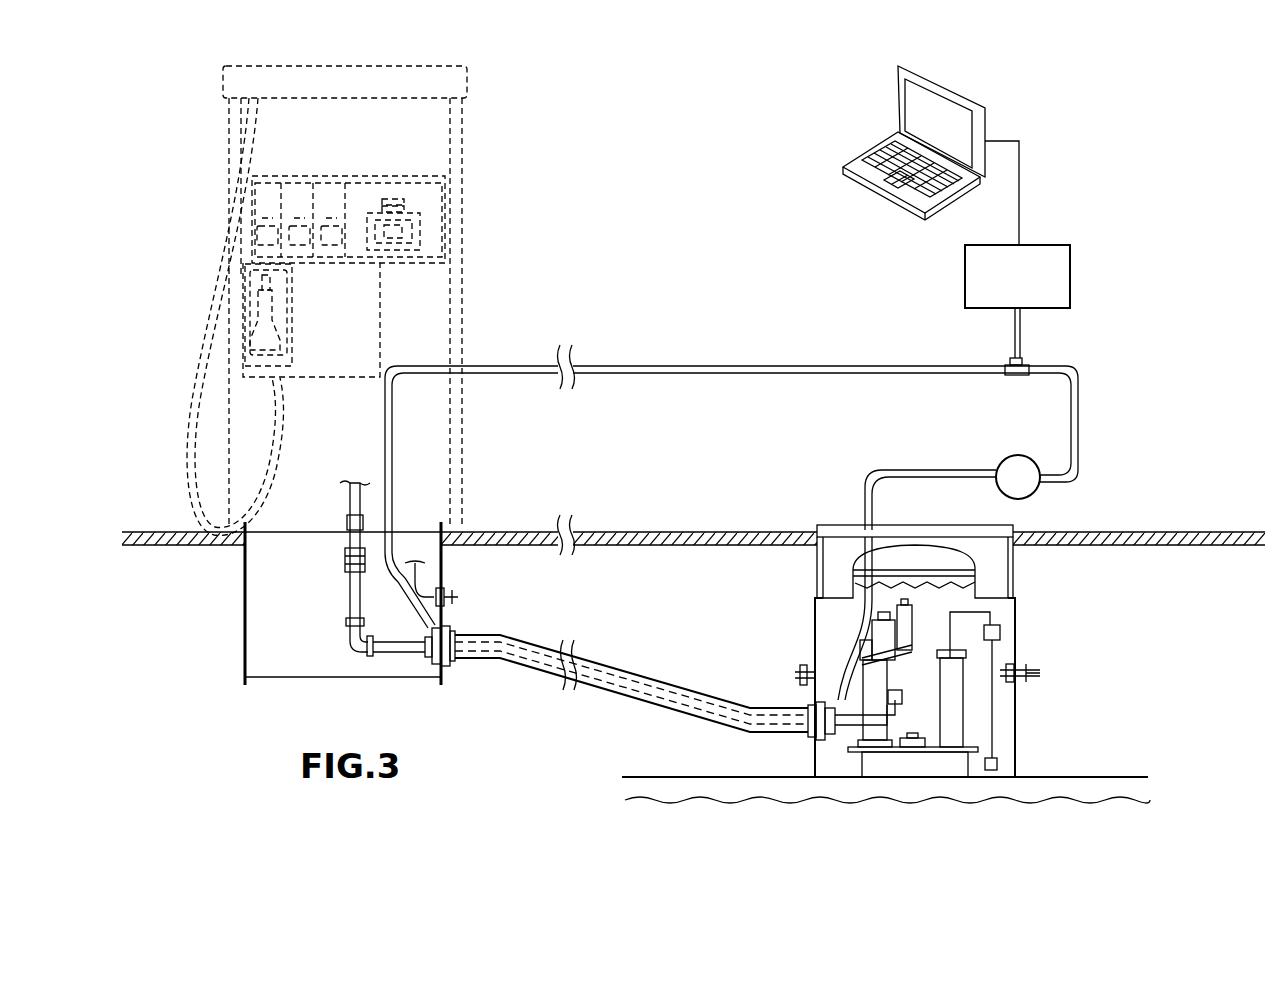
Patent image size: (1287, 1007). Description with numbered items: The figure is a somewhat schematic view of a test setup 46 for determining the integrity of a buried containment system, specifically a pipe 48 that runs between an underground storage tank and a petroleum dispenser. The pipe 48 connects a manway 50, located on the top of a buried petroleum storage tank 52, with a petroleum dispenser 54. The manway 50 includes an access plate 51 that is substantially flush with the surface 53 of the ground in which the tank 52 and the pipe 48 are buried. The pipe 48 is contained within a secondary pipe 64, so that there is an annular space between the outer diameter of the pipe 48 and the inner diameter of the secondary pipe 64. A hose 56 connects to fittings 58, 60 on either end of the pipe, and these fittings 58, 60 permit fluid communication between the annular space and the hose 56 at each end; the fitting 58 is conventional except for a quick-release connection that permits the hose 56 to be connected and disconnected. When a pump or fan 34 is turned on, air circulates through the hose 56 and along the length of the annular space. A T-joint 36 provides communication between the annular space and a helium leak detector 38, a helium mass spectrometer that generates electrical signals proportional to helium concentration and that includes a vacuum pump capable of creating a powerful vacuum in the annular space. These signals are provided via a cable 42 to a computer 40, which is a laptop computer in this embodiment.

The pump or fan 34 is at (1001, 460).
The T-joint 36 is at (1016, 377).
The helium leak detector 38 is at (1030, 287).
The computer 40 is at (898, 103).
The cable 42 is at (1022, 198).
The test setup 46 is at (667, 250).
The pipe 48 is at (688, 692).
The manway 50 is at (1020, 638).
The access plate 51 is at (845, 527).
The petroleum storage tank 52 is at (1078, 771).
The surface of the ground 53 is at (655, 530).
The petroleum dispenser 54 is at (463, 227).
The hose 56 is at (714, 364).
The fitting 58 is at (432, 663).
The fitting 60 is at (828, 740).
The secondary pipe 64 is at (622, 668).